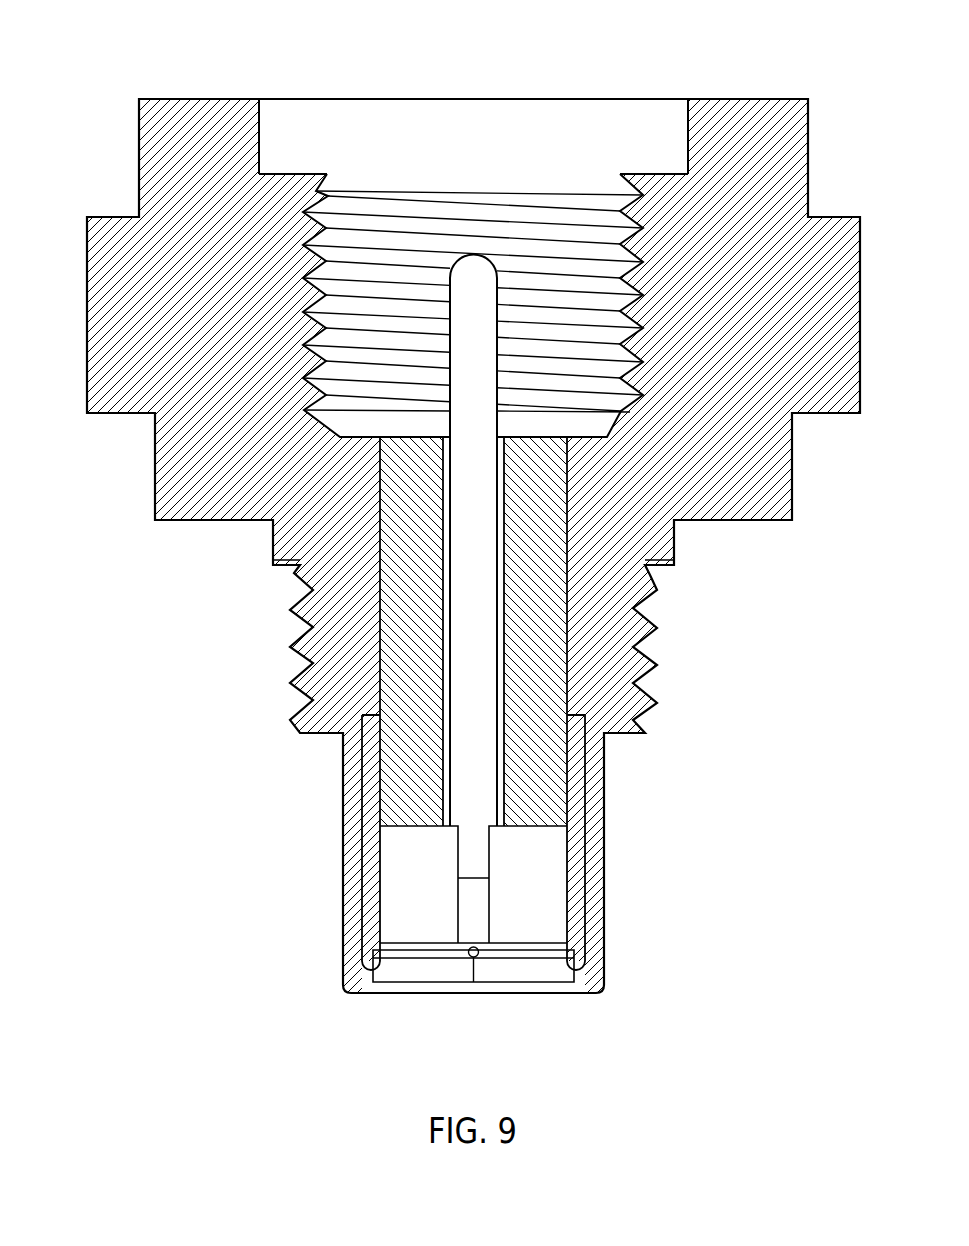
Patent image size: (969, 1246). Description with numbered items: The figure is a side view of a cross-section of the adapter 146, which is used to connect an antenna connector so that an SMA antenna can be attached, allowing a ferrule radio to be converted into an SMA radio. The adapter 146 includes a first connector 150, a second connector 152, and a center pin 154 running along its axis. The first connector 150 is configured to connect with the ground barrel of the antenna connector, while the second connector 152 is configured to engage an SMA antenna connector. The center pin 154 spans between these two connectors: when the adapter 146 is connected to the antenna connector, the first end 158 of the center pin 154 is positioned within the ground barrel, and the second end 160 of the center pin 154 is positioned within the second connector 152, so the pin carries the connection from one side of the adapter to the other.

The adapter 146 is at (107, 53).
The first connector 150 is at (398, 970).
The second connector 152 is at (337, 98).
The center pin 154 is at (478, 656).
The first end 158 is at (473, 1024).
The second end 160 is at (471, 66).